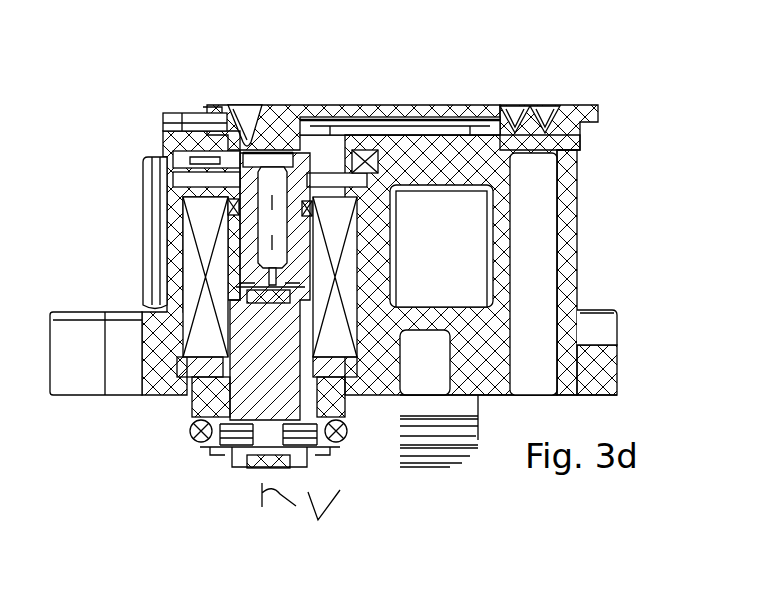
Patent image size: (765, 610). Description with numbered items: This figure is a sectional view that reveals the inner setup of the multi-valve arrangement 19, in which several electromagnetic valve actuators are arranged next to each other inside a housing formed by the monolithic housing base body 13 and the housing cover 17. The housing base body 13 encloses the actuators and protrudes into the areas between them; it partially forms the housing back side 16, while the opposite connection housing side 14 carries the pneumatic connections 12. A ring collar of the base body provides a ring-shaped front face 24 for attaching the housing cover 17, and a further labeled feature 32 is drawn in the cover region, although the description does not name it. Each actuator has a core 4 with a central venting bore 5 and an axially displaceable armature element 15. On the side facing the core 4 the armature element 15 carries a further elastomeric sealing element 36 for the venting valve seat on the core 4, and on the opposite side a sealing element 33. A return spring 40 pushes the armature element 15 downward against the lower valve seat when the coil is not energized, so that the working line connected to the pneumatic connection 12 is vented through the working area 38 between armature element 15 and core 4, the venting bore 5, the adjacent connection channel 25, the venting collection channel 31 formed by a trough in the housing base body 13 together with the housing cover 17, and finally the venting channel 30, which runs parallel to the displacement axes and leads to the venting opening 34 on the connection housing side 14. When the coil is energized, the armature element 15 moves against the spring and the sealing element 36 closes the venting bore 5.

The core 4 is at (247, 240).
The central venting bore 5 is at (400, 128).
The pneumatic connections 12 is at (203, 450).
The monolithic housing base body 13 is at (170, 140).
The connection housing side 14 is at (360, 395).
The armature elements 15 is at (240, 365).
The housing back side 16 is at (227, 107).
The housing cover 17 is at (297, 120).
The multi-valve arrangement 19 is at (173, 438).
The ring-shaped front face 24 is at (455, 135).
The connection channel 25 is at (240, 158).
The venting channel 30 is at (535, 290).
The venting collection channel 31 is at (398, 135).
The groove 32 is at (443, 125).
The sealing element 33 is at (280, 430).
The venting opening 34 is at (533, 395).
The further elastomeric sealing element 36 is at (247, 288).
The working area 38 is at (290, 270).
The return spring 40 is at (222, 450).